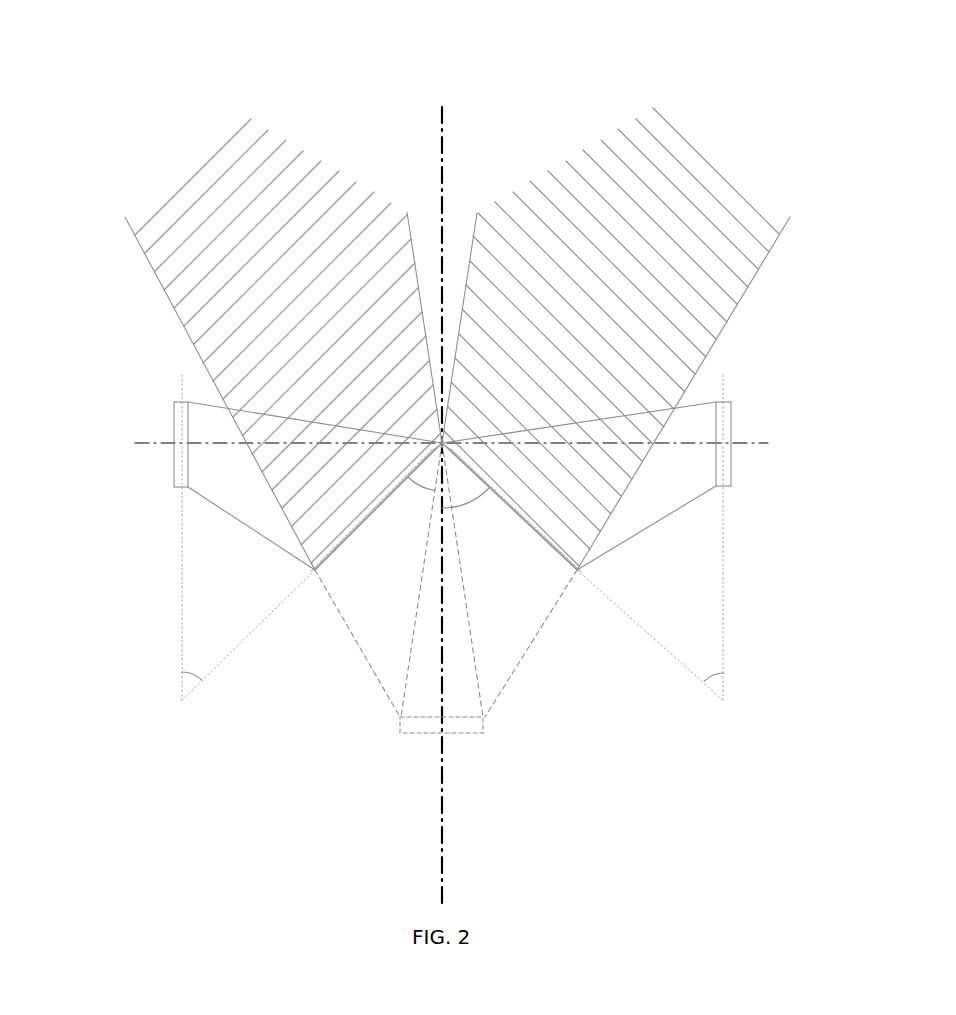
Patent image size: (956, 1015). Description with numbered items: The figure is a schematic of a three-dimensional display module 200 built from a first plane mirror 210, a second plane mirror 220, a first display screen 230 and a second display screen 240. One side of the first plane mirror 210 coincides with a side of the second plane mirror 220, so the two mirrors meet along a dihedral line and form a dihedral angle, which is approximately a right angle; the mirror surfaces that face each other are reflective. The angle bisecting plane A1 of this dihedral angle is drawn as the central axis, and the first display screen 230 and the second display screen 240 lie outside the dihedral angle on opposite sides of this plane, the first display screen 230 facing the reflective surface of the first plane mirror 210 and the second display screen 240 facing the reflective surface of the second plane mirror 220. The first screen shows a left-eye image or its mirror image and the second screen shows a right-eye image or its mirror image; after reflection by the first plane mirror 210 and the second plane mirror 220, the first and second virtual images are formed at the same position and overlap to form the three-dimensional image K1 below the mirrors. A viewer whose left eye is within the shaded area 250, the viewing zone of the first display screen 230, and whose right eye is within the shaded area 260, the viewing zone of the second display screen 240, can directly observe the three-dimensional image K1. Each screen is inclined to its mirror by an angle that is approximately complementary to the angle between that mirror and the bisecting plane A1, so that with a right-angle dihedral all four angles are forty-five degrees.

The 3D display module 200 is at (606, 18).
The first plane mirror 210 is at (377, 518).
The second plane mirror 220 is at (522, 523).
The first display screen 230 is at (173, 443).
The second display screen 240 is at (733, 443).
The shaded area 250 is at (257, 203).
The shaded area 260 is at (633, 198).
The 3D image K1 is at (472, 733).
The angle bisecting plane A1 is at (443, 818).